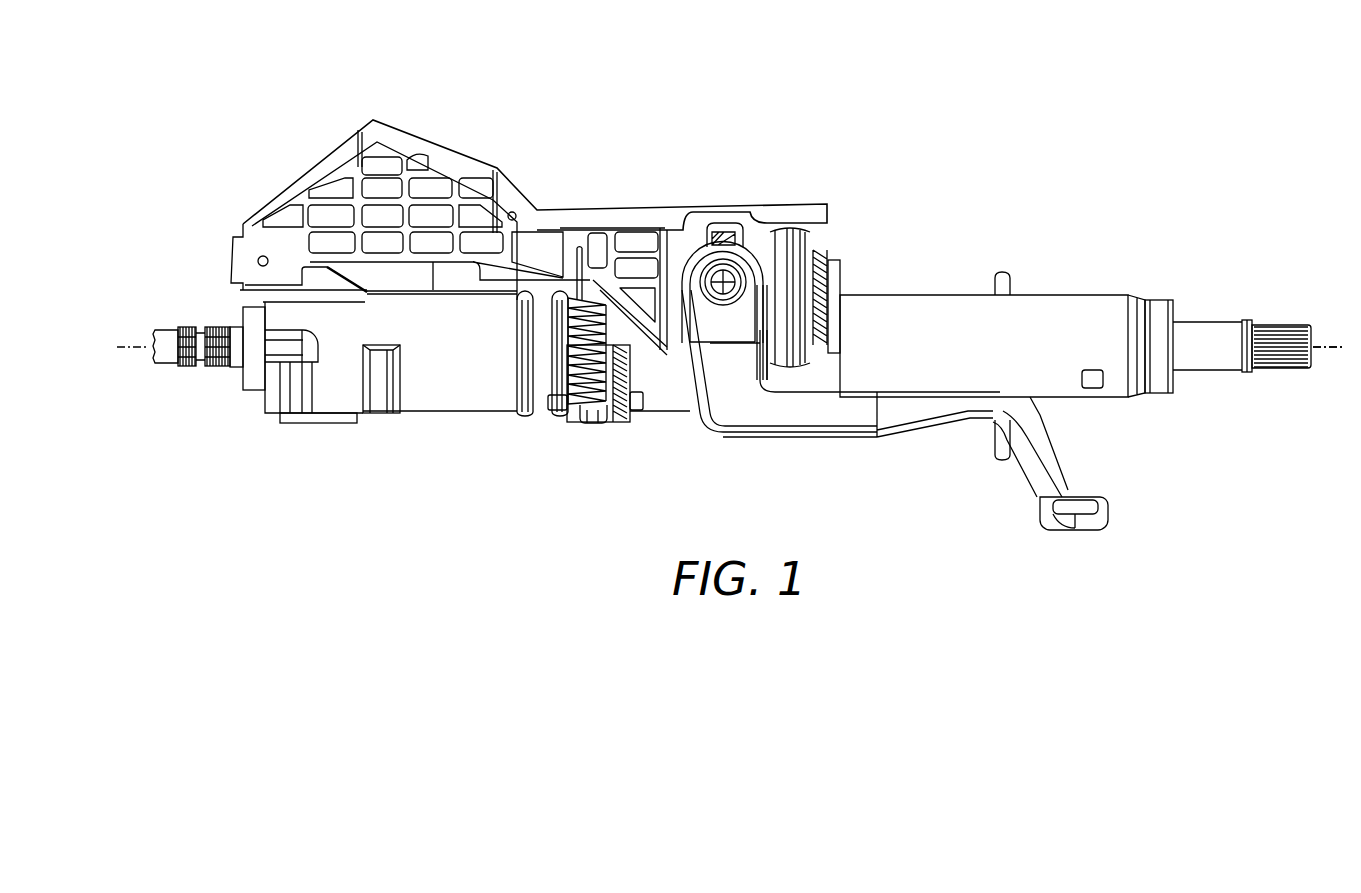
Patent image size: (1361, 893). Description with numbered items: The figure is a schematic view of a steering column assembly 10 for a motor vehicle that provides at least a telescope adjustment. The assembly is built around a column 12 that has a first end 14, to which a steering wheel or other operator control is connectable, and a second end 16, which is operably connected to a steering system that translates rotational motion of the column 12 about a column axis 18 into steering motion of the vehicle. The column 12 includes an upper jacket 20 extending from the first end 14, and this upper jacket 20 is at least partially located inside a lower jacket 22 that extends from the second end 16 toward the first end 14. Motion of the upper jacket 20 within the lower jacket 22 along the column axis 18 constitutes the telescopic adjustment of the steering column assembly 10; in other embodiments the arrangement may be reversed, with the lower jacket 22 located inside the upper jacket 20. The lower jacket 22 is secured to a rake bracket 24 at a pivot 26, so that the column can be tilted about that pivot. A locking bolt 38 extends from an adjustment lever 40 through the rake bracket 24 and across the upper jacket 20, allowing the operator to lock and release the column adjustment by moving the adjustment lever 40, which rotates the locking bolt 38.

The steering column assembly 10 is at (500, 92).
The column 12 is at (660, 405).
The first end 14 is at (1277, 370).
The second end 16 is at (172, 328).
The column axis 18 is at (1330, 347).
The upper jacket 20 is at (905, 296).
The lower jacket 22 is at (460, 412).
The rake bracket 24 is at (480, 192).
The pivot 26 is at (263, 255).
The locking bolt 38 is at (723, 282).
The adjustment lever 40 is at (797, 422).